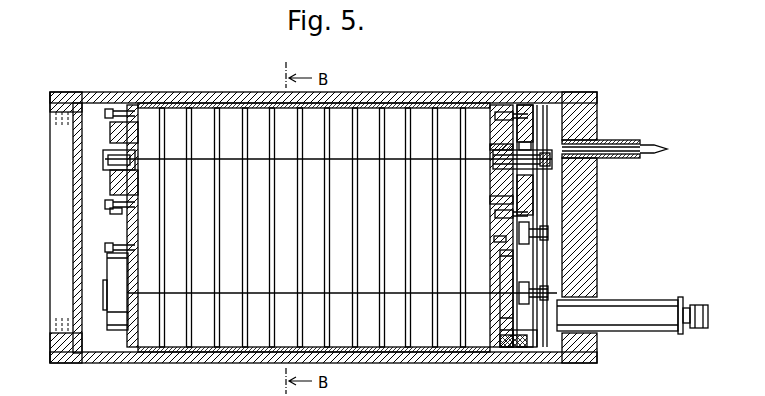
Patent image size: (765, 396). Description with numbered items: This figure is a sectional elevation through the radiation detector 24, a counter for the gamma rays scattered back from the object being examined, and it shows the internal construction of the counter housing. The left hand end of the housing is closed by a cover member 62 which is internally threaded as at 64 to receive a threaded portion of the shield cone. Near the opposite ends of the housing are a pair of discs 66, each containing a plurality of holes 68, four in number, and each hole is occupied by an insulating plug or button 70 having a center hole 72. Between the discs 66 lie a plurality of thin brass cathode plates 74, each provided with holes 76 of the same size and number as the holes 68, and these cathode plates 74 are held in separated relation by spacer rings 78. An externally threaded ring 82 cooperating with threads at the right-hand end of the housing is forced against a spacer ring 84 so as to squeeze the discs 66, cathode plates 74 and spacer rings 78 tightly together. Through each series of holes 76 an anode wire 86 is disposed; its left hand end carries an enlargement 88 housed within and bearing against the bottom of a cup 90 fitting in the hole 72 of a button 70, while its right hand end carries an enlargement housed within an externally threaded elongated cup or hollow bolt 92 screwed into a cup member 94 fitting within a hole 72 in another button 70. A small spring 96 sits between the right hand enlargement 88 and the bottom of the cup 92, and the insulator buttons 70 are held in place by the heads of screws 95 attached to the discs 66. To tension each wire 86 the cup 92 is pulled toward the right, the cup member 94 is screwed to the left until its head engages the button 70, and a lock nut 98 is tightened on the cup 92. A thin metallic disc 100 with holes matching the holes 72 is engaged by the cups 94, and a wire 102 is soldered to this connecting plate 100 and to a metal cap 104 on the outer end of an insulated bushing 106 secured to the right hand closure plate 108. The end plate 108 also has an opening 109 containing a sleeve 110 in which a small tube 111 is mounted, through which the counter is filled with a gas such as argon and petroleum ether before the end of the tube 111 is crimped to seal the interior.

The radiation detector 24 is at (396, 363).
The cover member 62 is at (78, 98).
The internal threads 64 is at (56, 120).
The discs 66 is at (134, 100).
The holes 68 is at (136, 108).
The insulating plug or button 70 is at (114, 110).
The center hole 72 is at (492, 178).
The cathode plates 74 is at (384, 120).
The holes 76 is at (240, 130).
The spacer rings 78 is at (408, 104).
The externally threaded ring 82 is at (530, 96).
The spacer ring 84 is at (510, 350).
The anode wire 86 is at (442, 160).
The enlargement 88 is at (116, 184).
The cup 90 is at (105, 152).
The externally threaded elongated cup or hollow bolt 92 is at (542, 224).
The cup member 94 is at (521, 134).
The screws 95 is at (112, 208).
The spring 96 is at (492, 150).
The lock nut 98 is at (528, 150).
The thin metallic disc 100 is at (494, 200).
The wire 102 is at (514, 352).
The metal cap 104 is at (700, 305).
The insulated bushing 106 is at (626, 302).
The closure plate 108 is at (592, 214).
The opening 109 is at (580, 138).
The sleeve 110 is at (614, 160).
The tube 111 is at (660, 148).